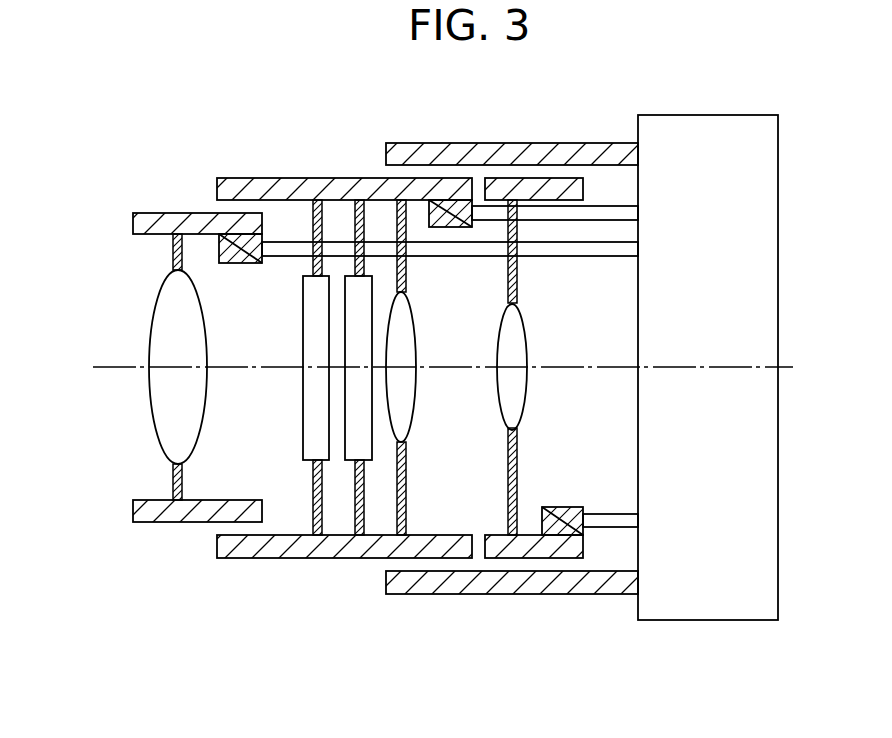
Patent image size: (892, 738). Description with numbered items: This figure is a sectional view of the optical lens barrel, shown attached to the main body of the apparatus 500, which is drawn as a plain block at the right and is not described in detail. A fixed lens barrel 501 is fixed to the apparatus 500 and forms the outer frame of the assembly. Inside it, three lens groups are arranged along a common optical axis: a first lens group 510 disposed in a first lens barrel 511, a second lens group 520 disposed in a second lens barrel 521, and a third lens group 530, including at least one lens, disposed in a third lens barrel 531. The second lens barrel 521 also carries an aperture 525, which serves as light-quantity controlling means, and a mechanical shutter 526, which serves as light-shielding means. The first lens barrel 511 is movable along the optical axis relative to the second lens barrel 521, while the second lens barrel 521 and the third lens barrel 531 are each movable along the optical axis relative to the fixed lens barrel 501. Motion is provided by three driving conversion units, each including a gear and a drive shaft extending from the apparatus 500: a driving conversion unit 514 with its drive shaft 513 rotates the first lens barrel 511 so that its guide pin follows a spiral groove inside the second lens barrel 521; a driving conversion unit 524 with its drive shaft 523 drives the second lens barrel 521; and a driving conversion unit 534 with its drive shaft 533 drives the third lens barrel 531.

The apparatus 500 is at (683, 610).
The fixed lens barrel 501 is at (425, 150).
The first lens group 510 is at (155, 411).
The first lens barrel 511 is at (168, 218).
The drive shaft 513 is at (283, 250).
The driving conversion unit 514 is at (232, 255).
The second lens group 520 is at (411, 395).
The second lens barrel 521 is at (258, 190).
The drive shaft 523 is at (571, 215).
The driving conversion unit 524 is at (450, 222).
The aperture 525 is at (308, 427).
The mechanical shutter 526 is at (370, 450).
The third lens group 530 is at (523, 397).
The third lens barrel 531 is at (527, 186).
The drive shaft 533 is at (612, 520).
The driving conversion unit 534 is at (562, 510).